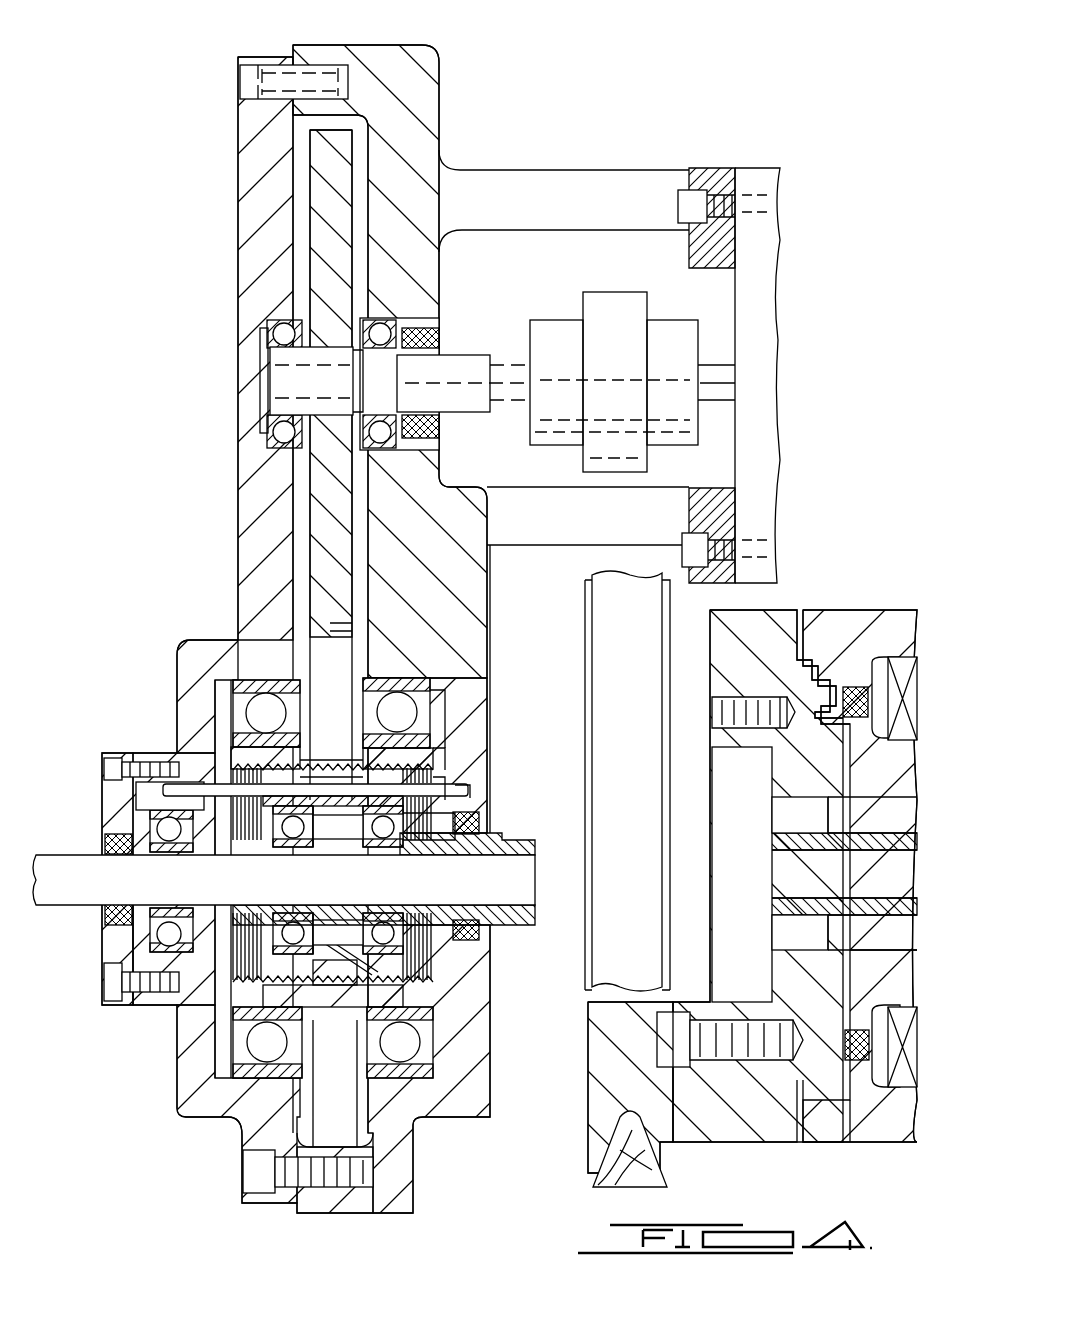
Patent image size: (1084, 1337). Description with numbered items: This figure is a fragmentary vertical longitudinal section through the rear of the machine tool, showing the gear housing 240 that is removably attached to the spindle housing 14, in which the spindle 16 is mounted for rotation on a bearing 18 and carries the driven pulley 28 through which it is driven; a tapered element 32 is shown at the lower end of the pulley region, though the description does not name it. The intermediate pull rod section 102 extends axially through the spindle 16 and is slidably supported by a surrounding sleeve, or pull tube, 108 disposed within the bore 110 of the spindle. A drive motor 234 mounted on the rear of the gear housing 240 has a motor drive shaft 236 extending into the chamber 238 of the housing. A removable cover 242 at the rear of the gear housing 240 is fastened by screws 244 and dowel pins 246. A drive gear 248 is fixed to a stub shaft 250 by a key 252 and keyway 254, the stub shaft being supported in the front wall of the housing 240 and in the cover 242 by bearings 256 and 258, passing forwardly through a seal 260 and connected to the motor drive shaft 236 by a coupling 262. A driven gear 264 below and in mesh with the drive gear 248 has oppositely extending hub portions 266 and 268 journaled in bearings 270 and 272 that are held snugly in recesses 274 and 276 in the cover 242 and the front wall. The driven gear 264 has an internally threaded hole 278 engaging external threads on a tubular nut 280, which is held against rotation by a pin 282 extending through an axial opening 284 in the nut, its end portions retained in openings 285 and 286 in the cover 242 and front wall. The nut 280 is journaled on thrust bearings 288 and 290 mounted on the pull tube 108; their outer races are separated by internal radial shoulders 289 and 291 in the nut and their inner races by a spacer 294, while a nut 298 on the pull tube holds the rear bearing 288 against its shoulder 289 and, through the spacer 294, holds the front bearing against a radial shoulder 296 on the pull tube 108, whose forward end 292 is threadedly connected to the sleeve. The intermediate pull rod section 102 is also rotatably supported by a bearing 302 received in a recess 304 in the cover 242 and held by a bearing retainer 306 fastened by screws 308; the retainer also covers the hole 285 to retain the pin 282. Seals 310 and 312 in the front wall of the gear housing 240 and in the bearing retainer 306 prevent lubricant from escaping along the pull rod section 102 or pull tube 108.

The spindle housing 14 is at (826, 612).
The spindle 16 is at (775, 612).
The bearing 18 is at (884, 660).
The driven pulley 28 is at (590, 1160).
The cone 32 is at (605, 1182).
The intermediate pull rod section 102 is at (118, 893).
The sleeve (pull tube) 108 is at (866, 826).
The bore 110 is at (866, 922).
The drive motor 234 is at (764, 176).
The motor drive shaft 236 is at (735, 380).
The chamber 238 is at (578, 266).
The gear housing 240 is at (418, 104).
The removable cover 242 is at (256, 166).
The screw 244 is at (248, 1172).
The dowel pin 246 is at (250, 80).
The drive gear 248 is at (320, 228).
The stub shaft 250 is at (275, 388).
The key 252 is at (325, 350).
The keyway 254 is at (262, 356).
The bearing 256 is at (396, 324).
The bearing 258 is at (276, 322).
The seal 260 is at (425, 346).
The coupling 262 is at (616, 302).
The driven gear 264 is at (356, 652).
The hub portion 266 is at (240, 758).
The hub portion 268 is at (440, 750).
The bearing 270 is at (236, 686).
The bearing 272 is at (428, 692).
The recess 274 is at (252, 680).
The recess 276 is at (400, 688).
The internally threaded hole 278 is at (446, 768).
The tubular nut 280 is at (340, 790).
The pin 282 is at (468, 798).
The axial opening 284 is at (333, 758).
The opening 285 is at (160, 792).
The opening 286 is at (446, 790).
The thrust bearing 288 is at (282, 850).
The internal radial shoulder 289 is at (306, 848).
The thrust bearing 290 is at (432, 922).
The internal radial shoulder 291 is at (384, 850).
The forward end 292 is at (496, 836).
The spacer 294 is at (345, 842).
The radial shoulder 296 is at (440, 848).
The nut 298 is at (248, 848).
The bearing 302 is at (140, 826).
The recess 304 is at (126, 958).
The bearing retainer 306 is at (116, 936).
The screw 308 is at (110, 762).
The seal 310 is at (492, 922).
The seal 312 is at (108, 843).